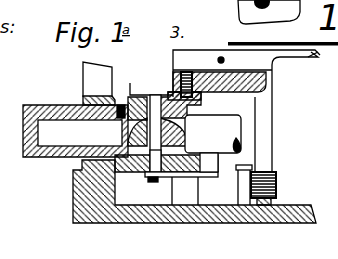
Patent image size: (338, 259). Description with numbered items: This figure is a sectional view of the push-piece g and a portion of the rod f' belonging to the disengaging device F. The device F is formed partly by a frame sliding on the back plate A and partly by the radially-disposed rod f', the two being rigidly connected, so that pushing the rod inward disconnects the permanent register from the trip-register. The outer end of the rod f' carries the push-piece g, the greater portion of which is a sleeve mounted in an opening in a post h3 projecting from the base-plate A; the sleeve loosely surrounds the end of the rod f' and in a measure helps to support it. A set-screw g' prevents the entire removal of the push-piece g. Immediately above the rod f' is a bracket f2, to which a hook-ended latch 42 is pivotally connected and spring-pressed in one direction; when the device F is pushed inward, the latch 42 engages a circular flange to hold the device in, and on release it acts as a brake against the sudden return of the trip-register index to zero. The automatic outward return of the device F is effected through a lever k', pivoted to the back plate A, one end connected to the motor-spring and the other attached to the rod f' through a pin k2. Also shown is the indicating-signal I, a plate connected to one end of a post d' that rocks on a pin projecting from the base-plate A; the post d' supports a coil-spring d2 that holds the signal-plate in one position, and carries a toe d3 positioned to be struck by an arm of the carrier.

The push-piece g is at (65, 131).
The post h3 is at (84, 76).
The set-screw g' is at (124, 89).
The pin k2 is at (153, 96).
The lever k' is at (166, 175).
The back plate A is at (128, 204).
The indicating-signal I is at (296, 43).
The disengaging device F is at (208, 73).
The bracket f2 is at (202, 102).
The rod f' is at (213, 143).
The post d' is at (286, 112).
The hook-ended latch 42 is at (298, 57).
The coil-spring d2 is at (277, 171).
The toe d3 is at (279, 198).